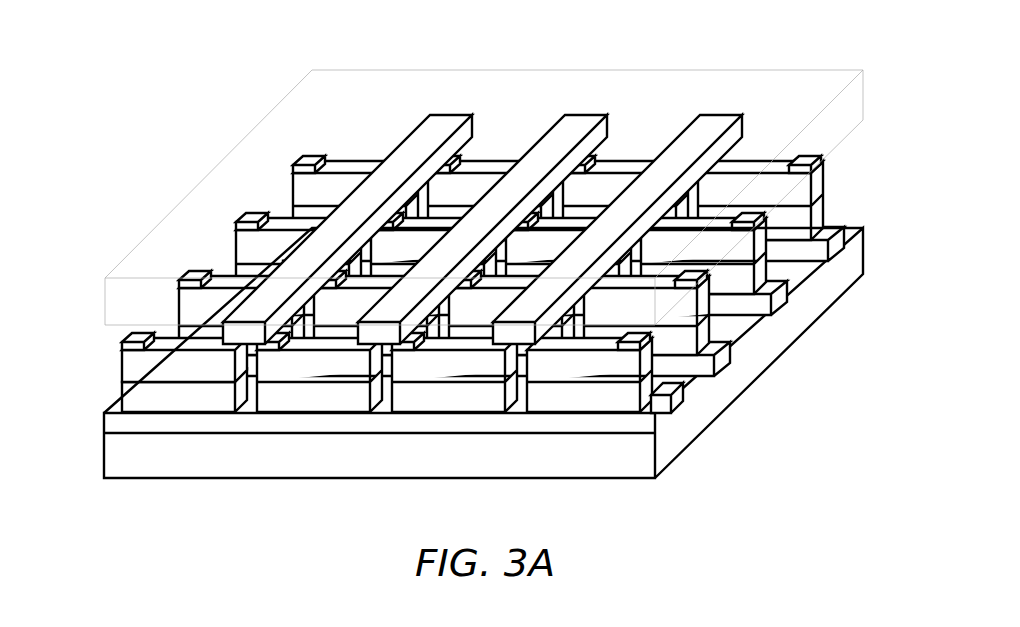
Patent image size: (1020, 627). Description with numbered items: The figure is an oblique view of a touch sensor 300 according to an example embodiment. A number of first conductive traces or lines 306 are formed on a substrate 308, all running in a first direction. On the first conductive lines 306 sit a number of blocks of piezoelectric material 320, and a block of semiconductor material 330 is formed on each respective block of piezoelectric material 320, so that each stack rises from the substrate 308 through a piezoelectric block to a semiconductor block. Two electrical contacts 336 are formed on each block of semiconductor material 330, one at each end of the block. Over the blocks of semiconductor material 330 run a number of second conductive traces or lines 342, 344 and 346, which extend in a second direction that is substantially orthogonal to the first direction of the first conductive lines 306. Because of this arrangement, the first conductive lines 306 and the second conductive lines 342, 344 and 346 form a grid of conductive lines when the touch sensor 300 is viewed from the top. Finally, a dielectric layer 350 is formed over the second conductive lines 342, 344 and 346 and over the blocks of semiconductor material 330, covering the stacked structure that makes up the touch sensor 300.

The touch sensor 300 is at (175, 84).
The first conductive lines 306 is at (664, 412).
The substrate 308 is at (104, 459).
The blocks of piezoelectric material 320 is at (124, 398).
The block of semiconductor material 330 is at (124, 369).
The electrical contacts 336 is at (122, 344).
The second conductive line 342 is at (432, 138).
The second conductive line 344 is at (566, 138).
The second conductive line 346 is at (700, 138).
The dielectric layer 350 is at (104, 301).